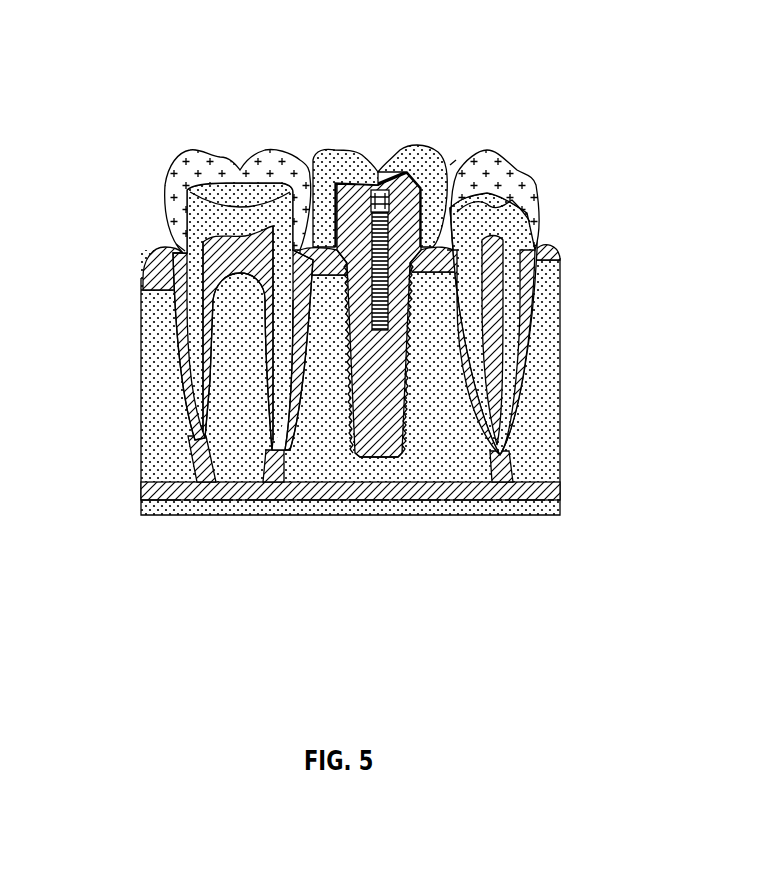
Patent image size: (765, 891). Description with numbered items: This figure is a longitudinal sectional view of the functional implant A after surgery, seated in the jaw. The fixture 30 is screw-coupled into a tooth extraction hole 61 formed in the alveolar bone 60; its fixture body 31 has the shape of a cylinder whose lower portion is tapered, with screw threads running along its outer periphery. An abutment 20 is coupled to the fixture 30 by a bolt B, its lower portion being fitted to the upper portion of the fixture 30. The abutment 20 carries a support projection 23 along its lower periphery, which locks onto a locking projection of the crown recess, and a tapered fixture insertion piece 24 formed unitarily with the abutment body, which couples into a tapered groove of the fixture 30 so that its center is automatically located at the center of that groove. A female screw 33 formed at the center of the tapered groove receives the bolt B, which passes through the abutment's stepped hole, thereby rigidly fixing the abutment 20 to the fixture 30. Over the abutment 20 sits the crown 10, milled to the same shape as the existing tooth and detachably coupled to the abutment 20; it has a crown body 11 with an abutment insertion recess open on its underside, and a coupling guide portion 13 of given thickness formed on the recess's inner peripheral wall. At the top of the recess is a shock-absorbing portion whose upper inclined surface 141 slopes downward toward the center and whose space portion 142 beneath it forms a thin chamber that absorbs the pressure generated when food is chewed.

The crown 10 is at (335, 297).
The crown body 11 is at (391, 158).
The coupling guide portion 13 is at (332, 193).
The upper inclined surface 141 is at (369, 177).
The space portion 142 is at (388, 168).
The abutment 20 is at (338, 299).
The support projection 23 is at (347, 265).
The tapered fixture insertion piece 24 is at (347, 303).
The fixture 30 is at (404, 378).
The fixture body 31 is at (392, 430).
The female screw 33 is at (510, 383).
The alveolar bone 60 is at (165, 450).
The tooth extraction hole 61 is at (360, 395).
The functional implant A is at (455, 160).
The bolt B is at (180, 247).